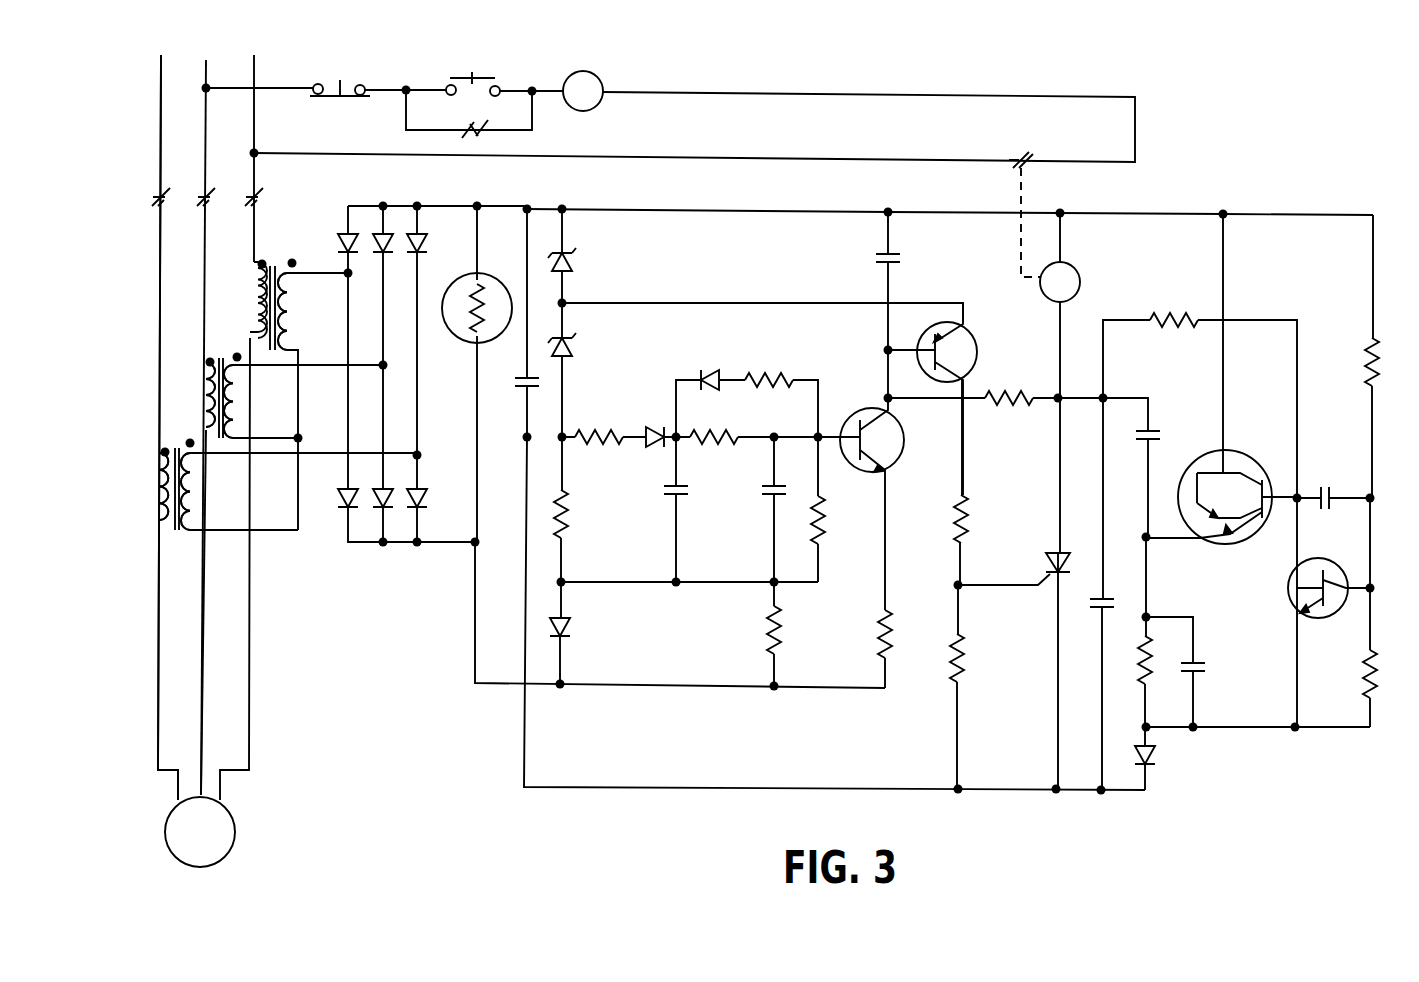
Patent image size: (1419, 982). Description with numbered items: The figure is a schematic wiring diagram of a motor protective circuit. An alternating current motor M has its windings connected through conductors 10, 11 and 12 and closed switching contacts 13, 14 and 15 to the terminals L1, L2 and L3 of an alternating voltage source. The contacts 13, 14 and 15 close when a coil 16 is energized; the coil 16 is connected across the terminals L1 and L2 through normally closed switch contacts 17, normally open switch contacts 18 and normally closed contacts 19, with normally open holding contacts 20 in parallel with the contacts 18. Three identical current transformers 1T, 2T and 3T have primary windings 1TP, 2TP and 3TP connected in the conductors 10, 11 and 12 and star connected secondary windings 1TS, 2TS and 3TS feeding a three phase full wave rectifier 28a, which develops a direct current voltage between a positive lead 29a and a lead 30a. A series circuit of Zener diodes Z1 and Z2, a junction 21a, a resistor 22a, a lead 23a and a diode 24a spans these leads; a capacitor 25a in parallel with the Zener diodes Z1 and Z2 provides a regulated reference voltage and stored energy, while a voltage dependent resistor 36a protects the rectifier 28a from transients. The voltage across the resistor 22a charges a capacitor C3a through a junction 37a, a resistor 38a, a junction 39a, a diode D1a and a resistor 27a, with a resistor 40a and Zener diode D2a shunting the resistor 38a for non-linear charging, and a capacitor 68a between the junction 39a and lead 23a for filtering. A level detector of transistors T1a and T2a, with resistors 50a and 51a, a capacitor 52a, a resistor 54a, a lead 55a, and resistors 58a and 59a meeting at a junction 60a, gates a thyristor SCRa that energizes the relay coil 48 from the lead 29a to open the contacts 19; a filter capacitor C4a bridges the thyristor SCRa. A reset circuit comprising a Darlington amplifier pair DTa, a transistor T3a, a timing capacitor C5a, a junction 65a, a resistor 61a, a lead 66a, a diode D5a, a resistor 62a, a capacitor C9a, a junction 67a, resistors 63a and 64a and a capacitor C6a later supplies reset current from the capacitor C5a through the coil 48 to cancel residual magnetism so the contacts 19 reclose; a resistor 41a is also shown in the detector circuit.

The conductor 10 is at (249, 752).
The conductor 11 is at (203, 728).
The conductor 12 is at (157, 712).
The switching contact 13 is at (261, 205).
The switching contact 14 is at (213, 205).
The switching contact 15 is at (168, 205).
The coil 16 is at (694, 116).
The normally closed switch contacts 17 is at (348, 96).
The normally open switch contacts 18 is at (484, 78).
The normally closed contacts 19 is at (1026, 158).
The normally open contacts 20 is at (482, 132).
The coil 48 is at (1060, 383).
The junction 21a is at (585, 434).
The resistor 22a is at (567, 520).
The lead 23a is at (577, 582).
The diode 24a is at (568, 640).
The capacitor 25a is at (514, 382).
The resistor 27a is at (603, 445).
The three phase full wave rectifier 28a is at (382, 342).
The lead 29a is at (680, 206).
The lead 30a is at (440, 548).
The voltage dependent resistor 36a is at (491, 278).
The junction 37a is at (774, 432).
The resistor 38a is at (725, 424).
The junction 39a is at (680, 442).
The resistor 40a is at (777, 375).
The resistor 41a is at (824, 530).
The resistor 50a is at (880, 630).
The resistor 51a is at (764, 630).
The capacitor 52a is at (893, 252).
The resistor 54a is at (1000, 392).
The lead 55a is at (1058, 404).
The resistor 58a is at (967, 520).
The resistor 59a is at (965, 660).
The junction 60a is at (950, 585).
The resistor 61a is at (1140, 672).
The resistor 62a is at (1150, 306).
The resistor 63a is at (1363, 352).
The resistor 64a is at (1362, 672).
The junction 65a is at (1150, 543).
The lead 66a is at (1210, 732).
The junction 67a is at (1365, 505).
The capacitor 68a is at (670, 483).
The Zener diode Z1 is at (574, 262).
The Zener diode Z2 is at (574, 347).
The diode D1a is at (650, 425).
The Zener diode D2a is at (712, 370).
The diode D5a is at (1150, 768).
The capacitor C3a is at (764, 493).
The filter capacitor C4a is at (1120, 589).
The timing capacitor C5a is at (1156, 432).
The capacitor C6a is at (1204, 662).
The capacitor C9a is at (1316, 487).
The transistor T1a is at (860, 472).
The transistor T2a is at (975, 340).
The transistor T3a is at (1289, 586).
The Darlington amplifier pair DTa is at (1258, 460).
The thyristor SCRa is at (1044, 544).
The terminal L1 is at (255, 146).
The terminal L2 is at (208, 413).
The terminal L3 is at (162, 415).
The alternating current motor M is at (200, 832).
The current transformer 1T is at (269, 270).
The primary winding 1TP is at (255, 308).
The secondary winding 1TS is at (294, 307).
The current transformer 2T is at (219, 357).
The primary winding 2TP is at (206, 408).
The secondary winding 2TS is at (246, 414).
The current transformer 3T is at (170, 525).
The primary winding 3TP is at (160, 508).
The secondary winding 3TS is at (200, 500).